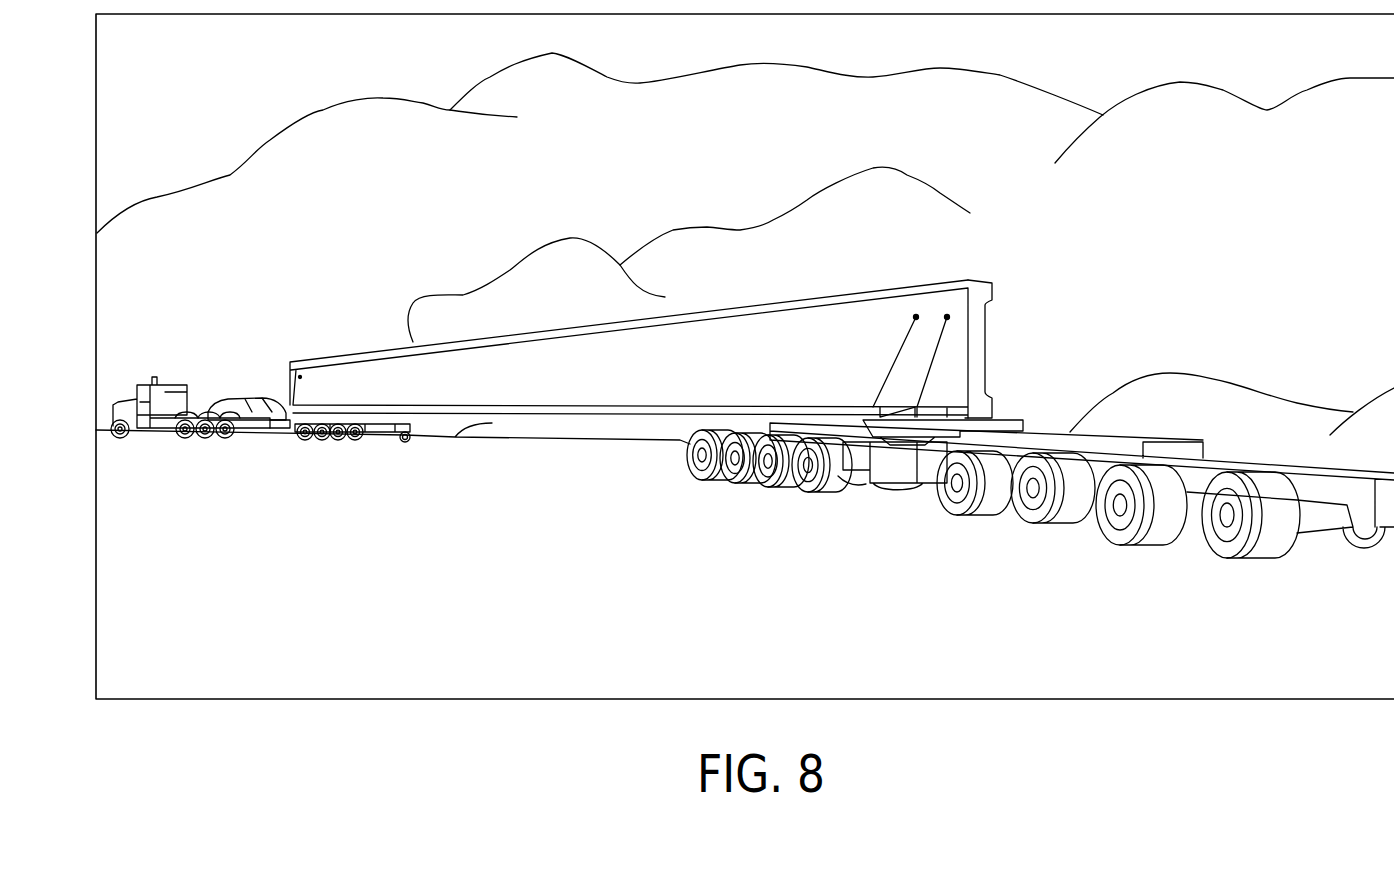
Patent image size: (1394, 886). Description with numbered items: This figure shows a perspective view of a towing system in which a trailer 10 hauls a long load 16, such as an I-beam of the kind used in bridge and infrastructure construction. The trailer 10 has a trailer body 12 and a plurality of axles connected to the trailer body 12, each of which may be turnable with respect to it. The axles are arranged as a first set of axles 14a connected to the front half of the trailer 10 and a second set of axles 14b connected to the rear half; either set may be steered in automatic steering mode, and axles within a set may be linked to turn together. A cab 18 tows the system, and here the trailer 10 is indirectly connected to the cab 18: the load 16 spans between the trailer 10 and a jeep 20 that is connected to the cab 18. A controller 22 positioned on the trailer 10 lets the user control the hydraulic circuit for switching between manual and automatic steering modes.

The trailer 10 is at (1033, 544).
The trailer body 12 is at (1013, 443).
The first set of axles 14a is at (750, 493).
The second set of axles 14b is at (1082, 533).
The load 16 is at (537, 373).
The cab 18 is at (165, 426).
The jeep 20 is at (284, 423).
The controller 22 is at (855, 467).